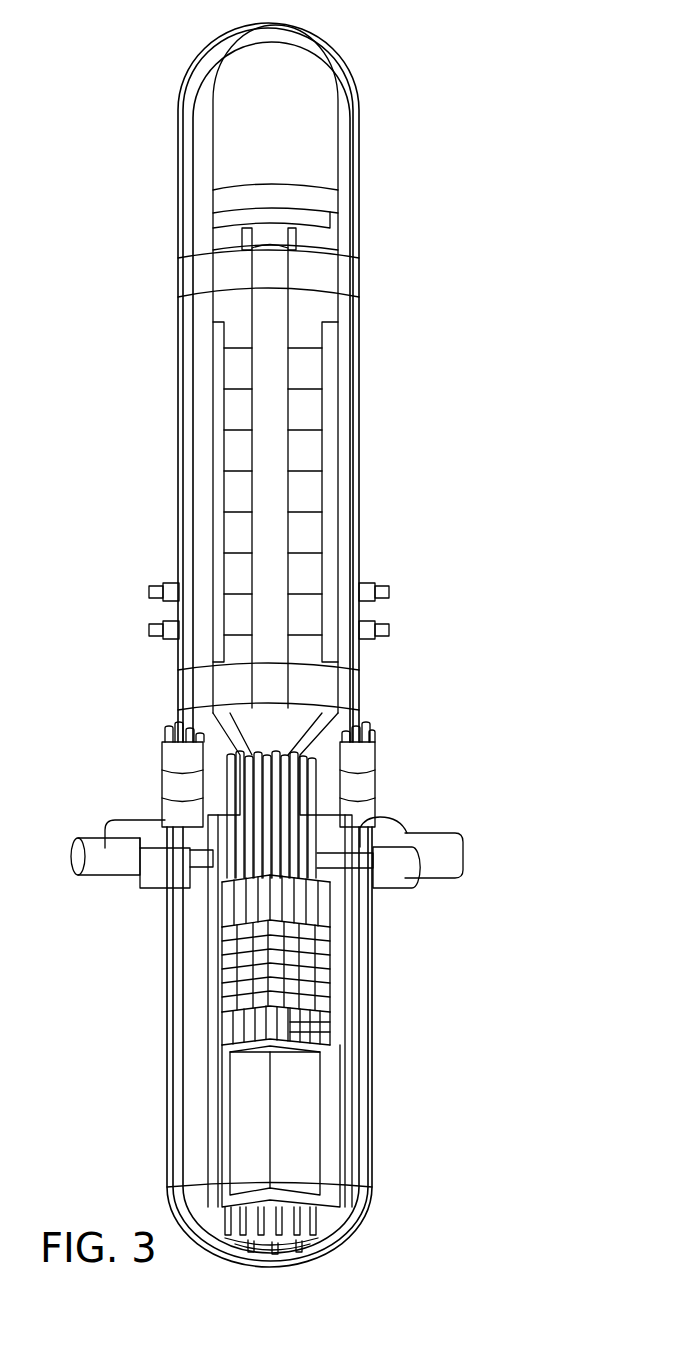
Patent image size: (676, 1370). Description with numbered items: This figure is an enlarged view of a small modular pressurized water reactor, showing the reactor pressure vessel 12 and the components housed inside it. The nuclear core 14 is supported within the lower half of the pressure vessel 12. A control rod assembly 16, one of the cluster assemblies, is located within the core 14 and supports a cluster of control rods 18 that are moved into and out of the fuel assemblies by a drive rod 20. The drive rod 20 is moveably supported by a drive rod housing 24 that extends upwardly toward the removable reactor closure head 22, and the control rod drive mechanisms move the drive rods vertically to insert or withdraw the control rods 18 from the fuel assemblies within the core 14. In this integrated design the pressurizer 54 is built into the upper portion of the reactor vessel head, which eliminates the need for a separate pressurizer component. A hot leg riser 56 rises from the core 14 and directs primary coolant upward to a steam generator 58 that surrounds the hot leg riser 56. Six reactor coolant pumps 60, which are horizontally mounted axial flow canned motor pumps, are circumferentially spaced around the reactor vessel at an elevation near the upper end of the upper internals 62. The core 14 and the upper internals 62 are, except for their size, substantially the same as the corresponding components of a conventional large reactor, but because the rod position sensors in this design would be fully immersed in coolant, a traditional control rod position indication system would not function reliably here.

The reactor pressure vessel 12 is at (372, 1097).
The nuclear core 14 is at (307, 1153).
The control rod assembly 16 is at (303, 1017).
The control rods 18 is at (313, 1033).
The drive rod 20 is at (297, 905).
The reactor closure head 22 is at (370, 733).
The drive rod housing 24 is at (293, 862).
The pressurizer 54 is at (358, 258).
The hot leg riser 56 is at (278, 538).
The steam generator 58 is at (303, 468).
The reactor coolant pumps 60 is at (455, 848).
The upper internals 62 is at (232, 975).